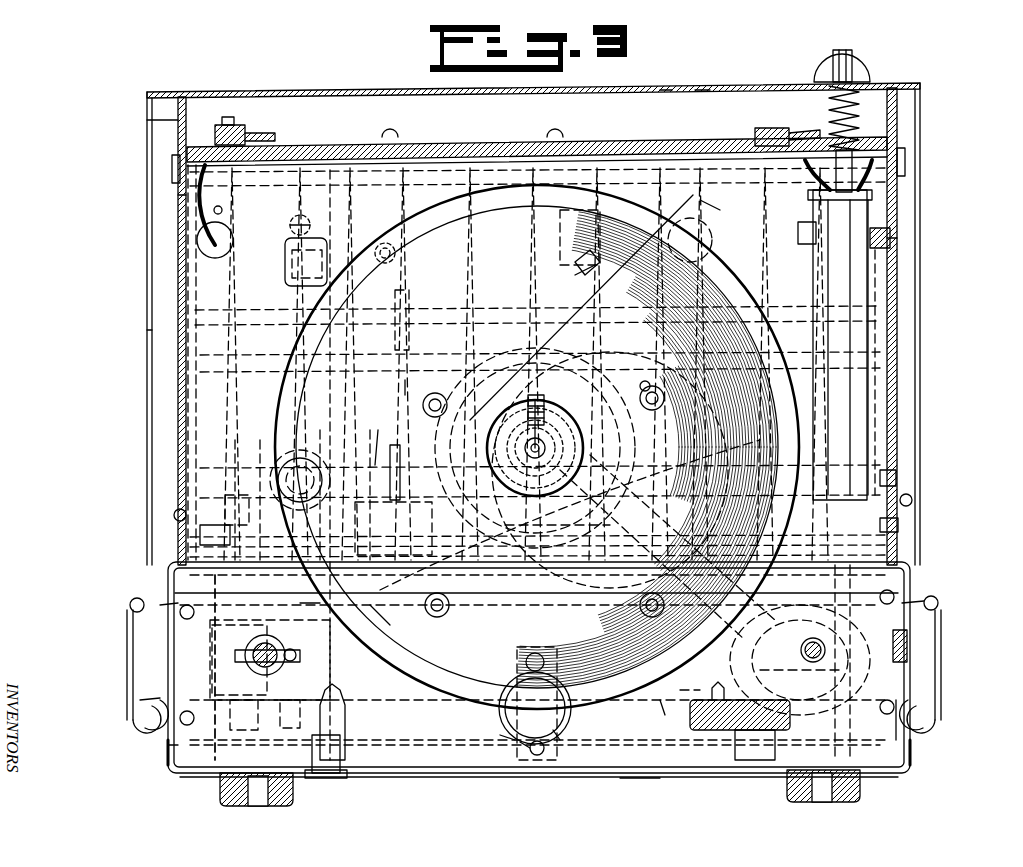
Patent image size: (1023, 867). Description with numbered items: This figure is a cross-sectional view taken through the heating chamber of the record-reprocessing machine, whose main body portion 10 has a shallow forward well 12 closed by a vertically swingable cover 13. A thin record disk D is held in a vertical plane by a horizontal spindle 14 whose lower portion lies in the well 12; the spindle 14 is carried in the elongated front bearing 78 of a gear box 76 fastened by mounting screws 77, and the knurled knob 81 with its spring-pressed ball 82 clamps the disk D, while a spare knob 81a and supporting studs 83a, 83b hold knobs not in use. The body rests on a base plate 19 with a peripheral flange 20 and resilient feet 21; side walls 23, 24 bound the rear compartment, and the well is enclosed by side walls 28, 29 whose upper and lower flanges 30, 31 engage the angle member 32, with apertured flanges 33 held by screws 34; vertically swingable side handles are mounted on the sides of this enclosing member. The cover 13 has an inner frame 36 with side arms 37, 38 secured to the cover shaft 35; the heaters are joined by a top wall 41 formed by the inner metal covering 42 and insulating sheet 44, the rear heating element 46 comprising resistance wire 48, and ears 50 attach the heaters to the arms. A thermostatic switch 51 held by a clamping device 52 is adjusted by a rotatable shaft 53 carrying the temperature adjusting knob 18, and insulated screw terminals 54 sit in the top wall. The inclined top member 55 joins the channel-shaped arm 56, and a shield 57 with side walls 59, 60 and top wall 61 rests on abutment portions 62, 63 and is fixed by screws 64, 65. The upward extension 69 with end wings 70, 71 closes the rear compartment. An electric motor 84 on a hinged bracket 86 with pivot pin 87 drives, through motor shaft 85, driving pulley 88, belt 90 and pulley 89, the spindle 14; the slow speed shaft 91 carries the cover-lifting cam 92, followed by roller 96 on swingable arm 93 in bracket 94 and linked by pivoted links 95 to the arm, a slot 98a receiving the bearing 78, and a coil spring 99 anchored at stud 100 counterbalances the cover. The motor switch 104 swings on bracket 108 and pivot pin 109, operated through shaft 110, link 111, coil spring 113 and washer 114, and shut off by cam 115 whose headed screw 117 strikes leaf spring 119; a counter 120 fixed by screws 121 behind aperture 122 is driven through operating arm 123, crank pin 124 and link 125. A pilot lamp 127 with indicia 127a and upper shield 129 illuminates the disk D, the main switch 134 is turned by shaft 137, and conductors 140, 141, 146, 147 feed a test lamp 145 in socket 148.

The main body portion 10 is at (494, 786).
The forward compartment or well 12 is at (740, 690).
The cover 13 is at (140, 264).
The spindle 14 is at (540, 465).
The temperature adjusting knob 18 is at (862, 68).
The base plate 19 is at (640, 778).
The peripheral flange 20 is at (170, 762).
The resilient feet 21 is at (220, 795).
The side wall 23 is at (140, 705).
The side wall 24 is at (910, 682).
The side wall 28 is at (168, 745).
The side wall 29 is at (904, 732).
The upper flange 30 is at (180, 590).
The lower flange 31 is at (168, 780).
The transverse angle member 32 is at (309, 605).
The apertured flanges 33 is at (535, 743).
The screws 34 is at (140, 600).
The cover shaft 35 is at (409, 371).
The inner frame 36 is at (170, 240).
The side arm 37 is at (170, 211).
The side arm 38 is at (897, 240).
The top wall 41 is at (630, 140).
The inner metal covering 42 is at (200, 272).
The heat insulating sheet 44 is at (660, 160).
The heating element 46 is at (705, 160).
The resistance wire 48 is at (725, 205).
The ears 50 is at (172, 175).
The thermostatic switch 51 is at (870, 285).
The clamping device 52 is at (798, 236).
The rotatable shaft 53 is at (878, 118).
The insulated screw terminals 54 is at (240, 127).
The top member 55 is at (470, 140).
The channel-shaped arm 56 is at (418, 256).
The shield 57 is at (709, 84).
The side wall 59 is at (147, 342).
The side wall 60 is at (897, 351).
The top wall 61 is at (668, 90).
The abutment portion 62 is at (147, 122).
The abutment portion 63 is at (900, 124).
The screw 64 is at (174, 515).
The screw 65 is at (912, 500).
The upward extension 69 is at (398, 180).
The end wing 70 is at (200, 297).
The end wing 71 is at (880, 262).
The gear box 76 is at (645, 380).
The mounting screws 77 is at (652, 595).
The front bearing 78 is at (565, 452).
The knurled knob 81 is at (500, 447).
The spare knob 81a is at (670, 700).
The spring-pressed ball 82 is at (525, 428).
The supporting stud 83a is at (740, 695).
The supporting stud 83b is at (332, 700).
The electric motor 84 is at (700, 732).
The motor shaft 85 is at (760, 612).
The hinged bracket 86 is at (898, 525).
The pivot pin 87 is at (896, 478).
The driving pulley 88 is at (765, 630).
The pulley 89 is at (615, 492).
The belt 90 is at (545, 580).
The slow speed shaft 91 is at (530, 585).
The cover-lifting cam 92 is at (395, 620).
The swingable arm 93 is at (453, 640).
The bracket 94 is at (500, 738).
The pivoted links 95 is at (412, 292).
The roller 96 is at (490, 488).
The slot 98a is at (500, 522).
The coil spring 99 is at (320, 455).
The stud 100 is at (380, 435).
The motor switch 104 is at (282, 630).
The bracket 108 is at (325, 775).
The pivot pin 109 is at (310, 698).
The shaft 110 is at (282, 665).
The link 111 is at (297, 656).
The coil spring 113 is at (288, 650).
The washer 114 is at (253, 715).
The shut-off cam 115 is at (225, 500).
The headed screw 117 is at (234, 667).
The leaf spring 119 is at (254, 647).
The counter 120 is at (322, 218).
The screws 121 is at (318, 218).
The aperture 122 is at (310, 264).
The operating arm 123 is at (235, 235).
The crank pin 124 is at (200, 540).
The link 125 is at (225, 470).
The pilot lamp 127 is at (500, 716).
The indicia 127a is at (560, 742).
The upper shield 129 is at (508, 746).
The main switch 134 is at (765, 673).
The shaft 137 is at (801, 651).
The conductor 140 is at (222, 210).
The conductor 141 is at (878, 184).
The test lamp 145 is at (690, 229).
The conductor 146 is at (585, 278).
The conductor 147 is at (588, 265).
The socket 148 is at (620, 222).
The record disk D is at (618, 719).